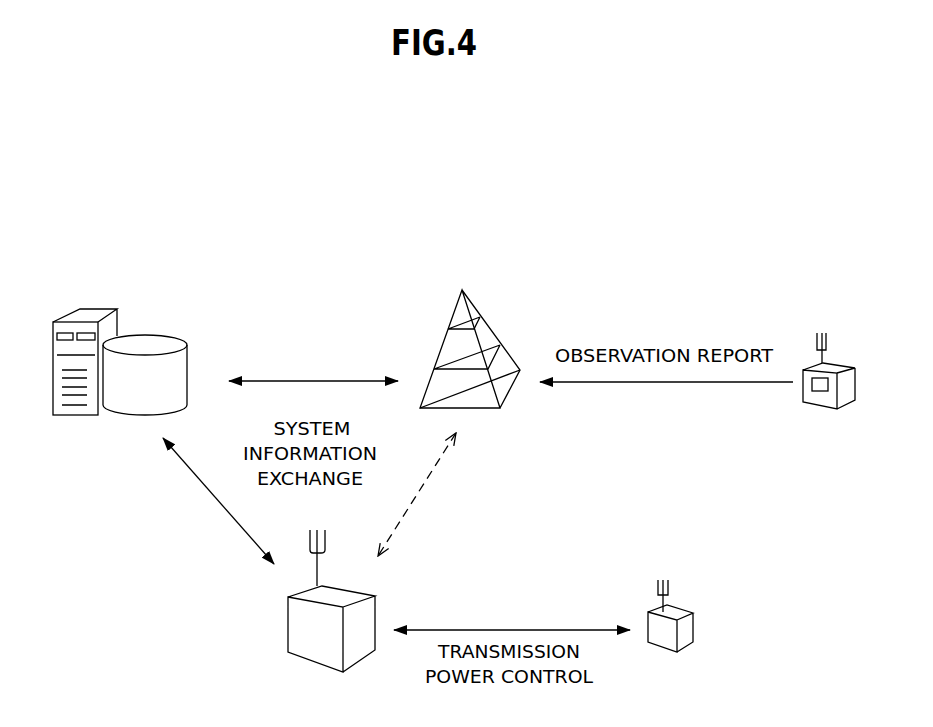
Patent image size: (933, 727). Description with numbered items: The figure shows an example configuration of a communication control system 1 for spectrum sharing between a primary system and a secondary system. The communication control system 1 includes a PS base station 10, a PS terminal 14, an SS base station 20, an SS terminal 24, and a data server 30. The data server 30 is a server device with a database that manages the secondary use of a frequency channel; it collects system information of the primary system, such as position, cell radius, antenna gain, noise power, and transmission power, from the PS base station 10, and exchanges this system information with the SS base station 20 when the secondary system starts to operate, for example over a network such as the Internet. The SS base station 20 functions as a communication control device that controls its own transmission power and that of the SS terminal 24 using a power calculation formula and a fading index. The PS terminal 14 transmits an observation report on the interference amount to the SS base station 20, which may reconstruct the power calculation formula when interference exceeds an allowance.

The communication control system 1 is at (88, 146).
The PS base station 10 is at (488, 332).
The PS terminal 14 is at (828, 365).
The SS base station 20 is at (298, 623).
The SS terminal 24 is at (695, 620).
The data server 30 is at (117, 309).